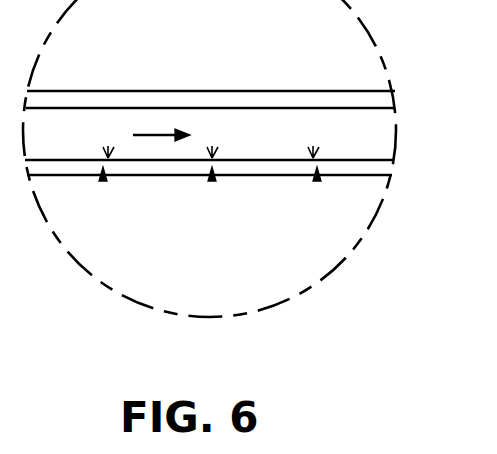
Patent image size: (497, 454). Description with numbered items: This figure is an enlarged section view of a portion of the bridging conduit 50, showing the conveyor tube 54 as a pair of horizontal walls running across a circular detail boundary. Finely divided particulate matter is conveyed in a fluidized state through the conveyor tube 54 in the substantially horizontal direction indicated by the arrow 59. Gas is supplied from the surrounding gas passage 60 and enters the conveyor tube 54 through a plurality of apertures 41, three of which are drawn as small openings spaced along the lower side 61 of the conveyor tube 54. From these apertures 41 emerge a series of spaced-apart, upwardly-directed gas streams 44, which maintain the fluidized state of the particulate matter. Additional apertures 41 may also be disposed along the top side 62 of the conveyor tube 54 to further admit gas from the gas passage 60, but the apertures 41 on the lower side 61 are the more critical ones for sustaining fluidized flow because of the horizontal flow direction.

The apertures 41 is at (102, 176).
The gas streams 44 is at (217, 153).
The bridging conduit 50 is at (322, 91).
The conveyor tube 54 is at (217, 108).
The arrow 59 is at (162, 132).
The gas passage 60 is at (294, 174).
The lower side 61 is at (245, 176).
The top side 62 is at (100, 91).